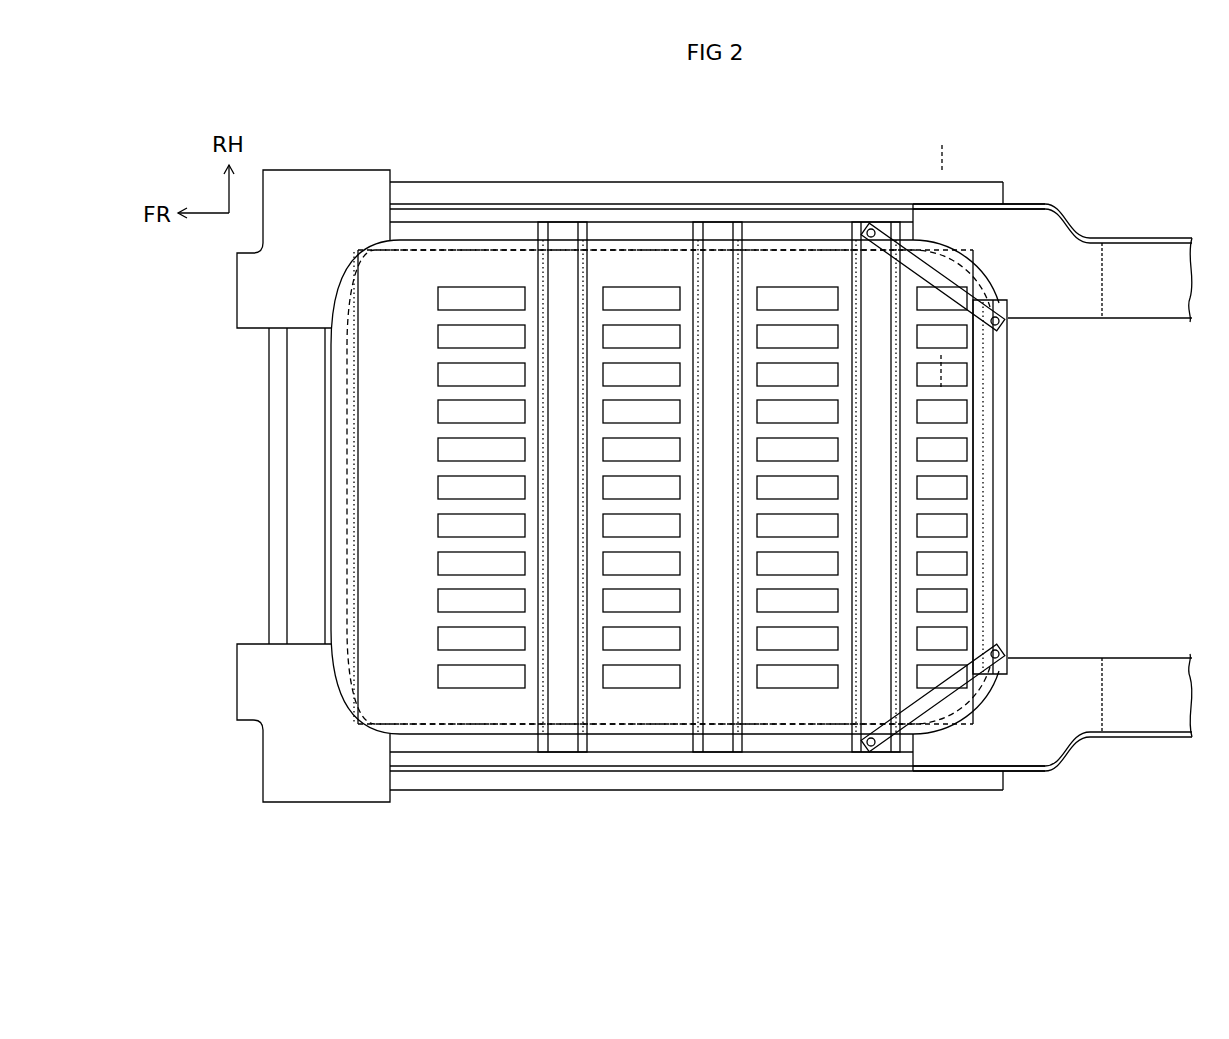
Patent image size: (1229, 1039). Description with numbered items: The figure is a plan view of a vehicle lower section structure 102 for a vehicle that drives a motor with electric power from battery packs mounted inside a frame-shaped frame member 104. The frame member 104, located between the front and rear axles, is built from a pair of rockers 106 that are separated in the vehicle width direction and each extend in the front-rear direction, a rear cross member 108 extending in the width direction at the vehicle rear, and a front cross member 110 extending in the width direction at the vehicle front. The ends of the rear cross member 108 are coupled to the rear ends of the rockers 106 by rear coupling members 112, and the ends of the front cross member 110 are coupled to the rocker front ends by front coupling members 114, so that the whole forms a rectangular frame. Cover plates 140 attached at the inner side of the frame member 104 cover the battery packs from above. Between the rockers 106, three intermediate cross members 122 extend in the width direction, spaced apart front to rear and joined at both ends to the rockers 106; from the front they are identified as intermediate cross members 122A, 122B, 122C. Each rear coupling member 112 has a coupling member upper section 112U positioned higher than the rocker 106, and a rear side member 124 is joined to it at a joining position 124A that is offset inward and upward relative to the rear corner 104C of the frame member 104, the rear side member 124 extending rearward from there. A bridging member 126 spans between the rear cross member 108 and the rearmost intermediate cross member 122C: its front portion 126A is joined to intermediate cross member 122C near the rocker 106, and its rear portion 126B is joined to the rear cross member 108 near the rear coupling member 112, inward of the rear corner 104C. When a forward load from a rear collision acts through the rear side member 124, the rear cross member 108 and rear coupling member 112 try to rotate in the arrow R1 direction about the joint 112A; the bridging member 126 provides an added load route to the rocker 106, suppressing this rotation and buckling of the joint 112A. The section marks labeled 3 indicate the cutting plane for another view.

The vehicle lower section structure 102 is at (1098, 164).
The frame member 104 is at (468, 803).
The rear corner 104C is at (1003, 181).
The rocker 106 is at (653, 180).
The rear cross member 108 is at (1012, 482).
The front cross member 110 is at (268, 524).
The rear coupling member 112 is at (1048, 322).
The joint 112A is at (913, 208).
The coupling member upper section 112U is at (1082, 268).
The front coupling member 114 is at (253, 332).
The intermediate cross member 122 is at (648, 437).
The intermediate cross member 122A is at (536, 270).
The intermediate cross member 122B is at (691, 272).
The intermediate cross member 122C is at (850, 270).
The rear side member 124 is at (1145, 322).
The joining position 124A is at (1102, 320).
The bridging member 126 is at (962, 260).
The front portion 126A is at (862, 232).
The rear portion 126B is at (1006, 330).
The cover plate 140 is at (425, 700).
The arrow R1 direction R1 is at (869, 324).
The section line 3 is at (935, 153).